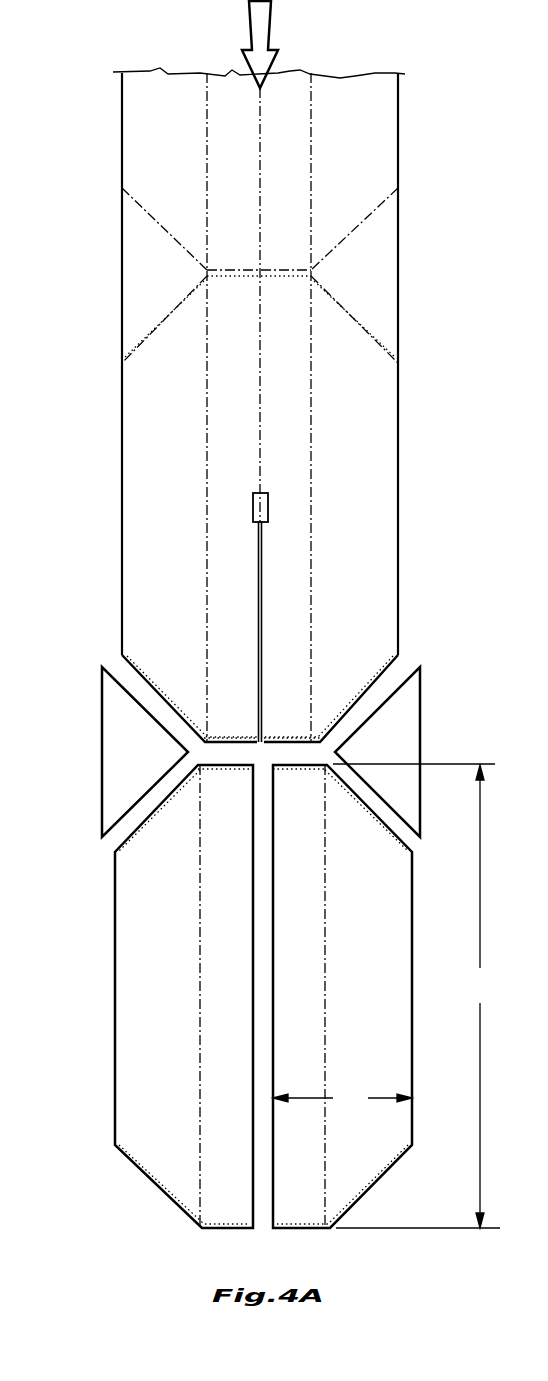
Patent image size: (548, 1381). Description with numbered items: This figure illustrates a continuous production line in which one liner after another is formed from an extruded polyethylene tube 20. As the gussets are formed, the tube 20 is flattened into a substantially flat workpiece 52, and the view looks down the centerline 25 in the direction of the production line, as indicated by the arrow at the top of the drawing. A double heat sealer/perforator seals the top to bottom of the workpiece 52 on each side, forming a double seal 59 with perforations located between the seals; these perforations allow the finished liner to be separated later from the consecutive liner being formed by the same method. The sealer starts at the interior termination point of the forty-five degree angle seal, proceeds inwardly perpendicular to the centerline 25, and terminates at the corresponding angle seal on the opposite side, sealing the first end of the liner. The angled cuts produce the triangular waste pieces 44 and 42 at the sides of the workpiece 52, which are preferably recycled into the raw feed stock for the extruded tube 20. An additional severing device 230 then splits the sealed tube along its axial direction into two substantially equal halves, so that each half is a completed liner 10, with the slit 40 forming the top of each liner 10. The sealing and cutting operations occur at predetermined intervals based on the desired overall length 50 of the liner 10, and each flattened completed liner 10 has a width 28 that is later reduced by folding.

The extruded tube 20 is at (260, 378).
The flat workpiece 52 is at (132, 403).
The centerline 25 is at (262, 393).
The severing device 230 is at (270, 507).
The slit 40 is at (266, 718).
The double seal 59 is at (228, 737).
The waste piece 44 is at (112, 742).
The waste piece 42 is at (412, 742).
The liner 10 is at (120, 953).
The overall length 50 is at (416, 996).
The width 28 is at (342, 1097).